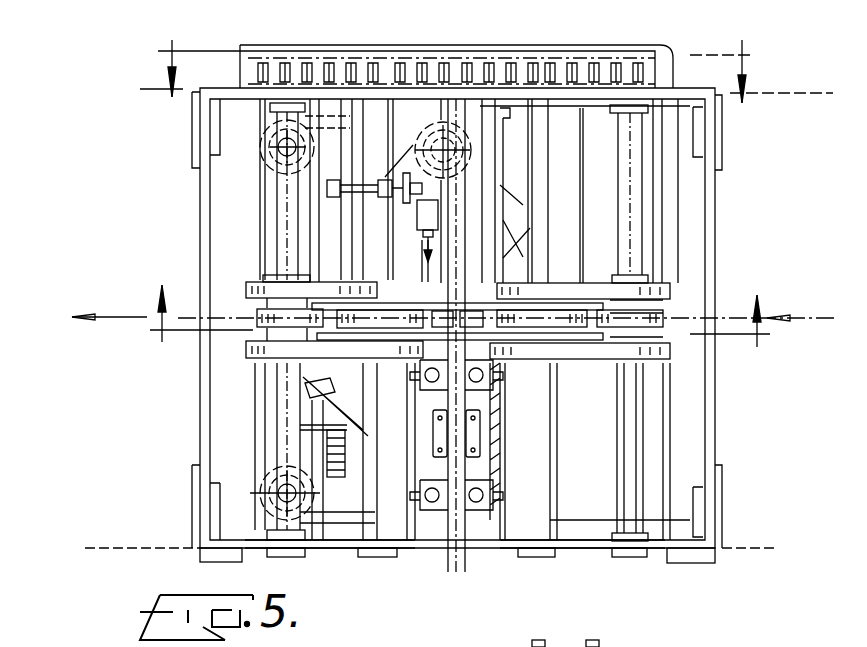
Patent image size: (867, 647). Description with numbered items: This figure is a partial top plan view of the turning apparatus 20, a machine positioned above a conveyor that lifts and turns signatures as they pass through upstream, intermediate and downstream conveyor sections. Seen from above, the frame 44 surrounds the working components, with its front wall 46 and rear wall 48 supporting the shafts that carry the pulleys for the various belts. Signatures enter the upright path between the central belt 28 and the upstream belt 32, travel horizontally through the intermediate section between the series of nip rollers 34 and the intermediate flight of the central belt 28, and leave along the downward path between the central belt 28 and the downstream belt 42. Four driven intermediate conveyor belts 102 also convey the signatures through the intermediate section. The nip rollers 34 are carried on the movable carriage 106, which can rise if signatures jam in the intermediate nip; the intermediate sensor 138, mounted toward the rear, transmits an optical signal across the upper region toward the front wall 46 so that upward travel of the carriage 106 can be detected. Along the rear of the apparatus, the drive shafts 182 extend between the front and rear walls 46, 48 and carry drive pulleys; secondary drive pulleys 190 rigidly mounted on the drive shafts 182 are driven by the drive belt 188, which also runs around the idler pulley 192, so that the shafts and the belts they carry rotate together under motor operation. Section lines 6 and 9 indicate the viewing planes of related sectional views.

The section line 6- 6 is at (486, 55).
The section line 9- 9 is at (431, 340).
The turning apparatus 20 is at (172, 156).
The central belt 28 is at (560, 333).
The upstream belt 32 is at (668, 313).
The nip rollers 34 is at (390, 327).
The downstream belt 42 is at (255, 320).
The frame 44 is at (580, 553).
The front wall 46 is at (340, 548).
The rear wall 48 is at (232, 88).
The intermediate conveyor belts 102 is at (267, 290).
The carriage 106 is at (464, 543).
The intermediate sensor 138 is at (415, 222).
The drive shafts 182 is at (280, 190).
The drive belt 188 is at (415, 58).
The secondary drive pulleys 190 is at (347, 52).
The idler pulley 192 is at (474, 56).